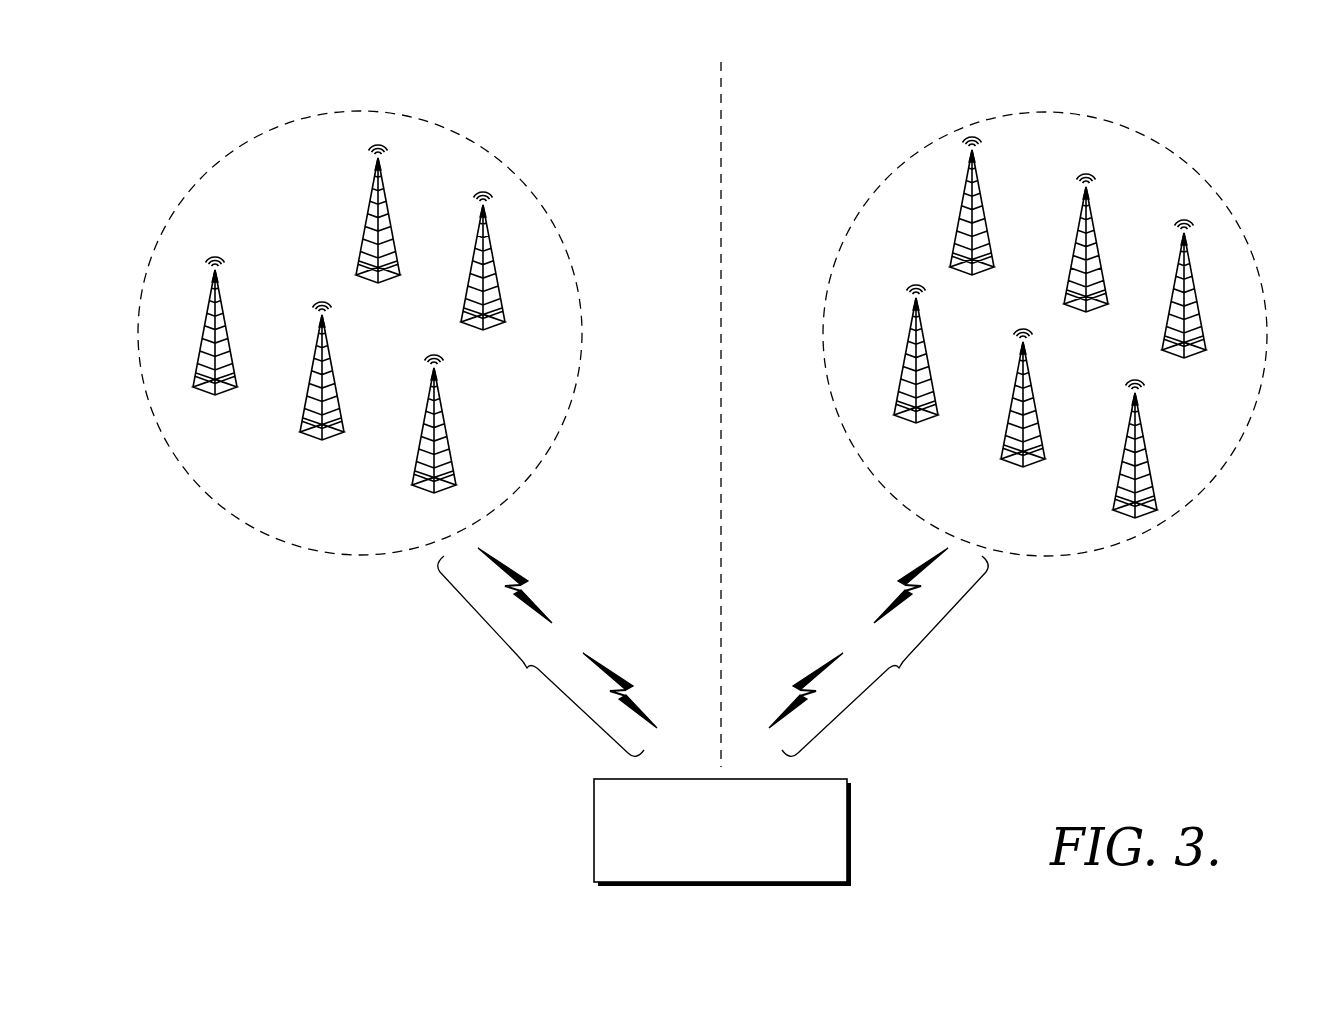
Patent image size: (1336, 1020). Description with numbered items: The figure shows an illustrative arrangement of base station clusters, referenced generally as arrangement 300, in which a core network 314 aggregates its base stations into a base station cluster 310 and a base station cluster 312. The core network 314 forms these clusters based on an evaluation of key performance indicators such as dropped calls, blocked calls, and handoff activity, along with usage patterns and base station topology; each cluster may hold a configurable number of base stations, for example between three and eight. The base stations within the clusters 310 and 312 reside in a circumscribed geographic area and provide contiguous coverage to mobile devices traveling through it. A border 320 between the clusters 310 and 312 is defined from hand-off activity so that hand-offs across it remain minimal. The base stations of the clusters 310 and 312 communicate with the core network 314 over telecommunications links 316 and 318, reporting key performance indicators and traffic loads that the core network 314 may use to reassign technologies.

The arrangement of base station clusters 300 is at (186, 97).
The base station cluster 310 is at (482, 148).
The base station cluster 312 is at (1168, 148).
The core network 314 is at (720, 887).
The telecommunications link 316 is at (525, 669).
The telecommunications link 318 is at (901, 669).
The border 320 is at (718, 118).